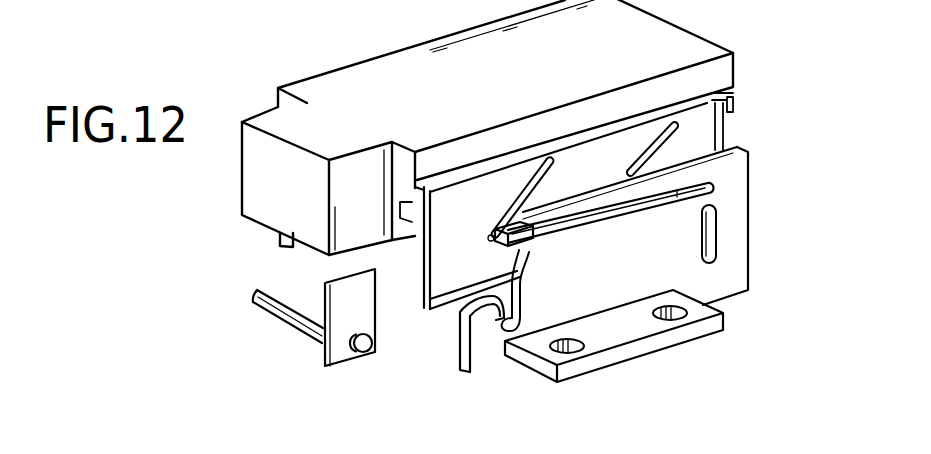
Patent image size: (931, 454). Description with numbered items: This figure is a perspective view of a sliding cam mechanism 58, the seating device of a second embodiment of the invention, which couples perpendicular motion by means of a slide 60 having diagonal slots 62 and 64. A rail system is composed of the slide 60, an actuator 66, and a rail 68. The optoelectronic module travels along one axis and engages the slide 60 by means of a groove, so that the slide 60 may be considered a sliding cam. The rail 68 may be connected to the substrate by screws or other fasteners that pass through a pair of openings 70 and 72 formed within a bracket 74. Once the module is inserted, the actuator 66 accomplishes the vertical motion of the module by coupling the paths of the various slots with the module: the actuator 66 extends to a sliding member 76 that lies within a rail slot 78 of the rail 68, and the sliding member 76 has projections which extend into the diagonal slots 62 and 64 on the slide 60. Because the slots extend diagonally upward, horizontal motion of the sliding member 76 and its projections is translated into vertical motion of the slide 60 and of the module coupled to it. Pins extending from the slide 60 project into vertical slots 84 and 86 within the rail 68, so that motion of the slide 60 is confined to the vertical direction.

The sliding cam mechanism 58 is at (766, 22).
The slide 60 is at (707, 128).
The diagonal slot 62 is at (547, 178).
The diagonal slot 64 is at (659, 141).
The actuator 66 is at (327, 302).
The rail 68 is at (737, 168).
The opening 70 is at (580, 337).
The opening 72 is at (687, 310).
The bracket 74 is at (727, 303).
The sliding member 76 is at (527, 250).
The rail slot 78 is at (707, 188).
The vertical slot 84 is at (488, 327).
The vertical slot 86 is at (707, 243).